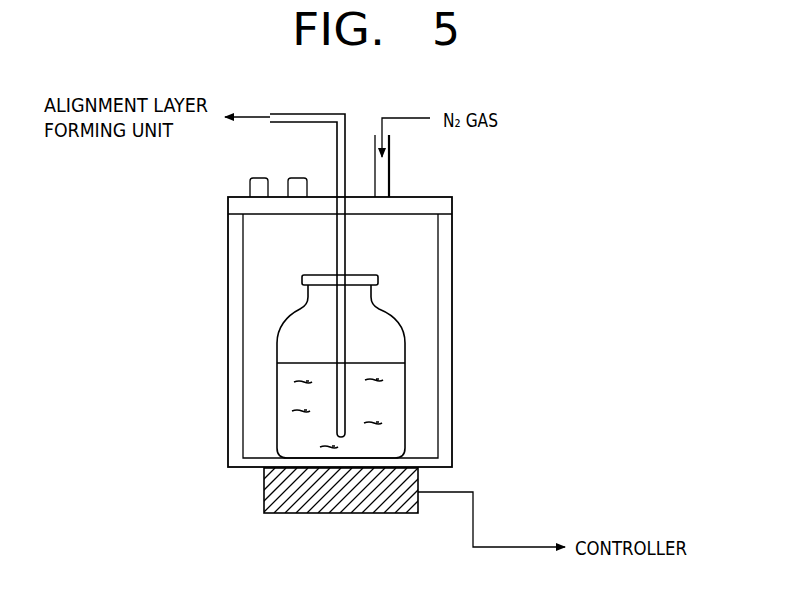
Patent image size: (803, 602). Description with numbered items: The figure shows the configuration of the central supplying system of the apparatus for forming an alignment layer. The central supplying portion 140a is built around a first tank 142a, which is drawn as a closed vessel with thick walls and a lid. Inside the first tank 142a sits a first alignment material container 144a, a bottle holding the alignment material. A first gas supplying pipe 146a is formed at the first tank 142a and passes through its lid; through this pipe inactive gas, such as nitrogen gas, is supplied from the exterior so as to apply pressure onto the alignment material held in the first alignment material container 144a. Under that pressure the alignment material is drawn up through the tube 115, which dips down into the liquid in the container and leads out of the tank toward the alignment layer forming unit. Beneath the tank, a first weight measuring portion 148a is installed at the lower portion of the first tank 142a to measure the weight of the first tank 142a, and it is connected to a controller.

The tube / supply pipe 115 is at (337, 148).
The central supplying portion 140a is at (505, 266).
The first tank 142a is at (452, 317).
The first alignment material container 144a is at (397, 397).
The first gas supplying pipe 146a is at (389, 166).
The first weight measuring portion 148a is at (340, 513).